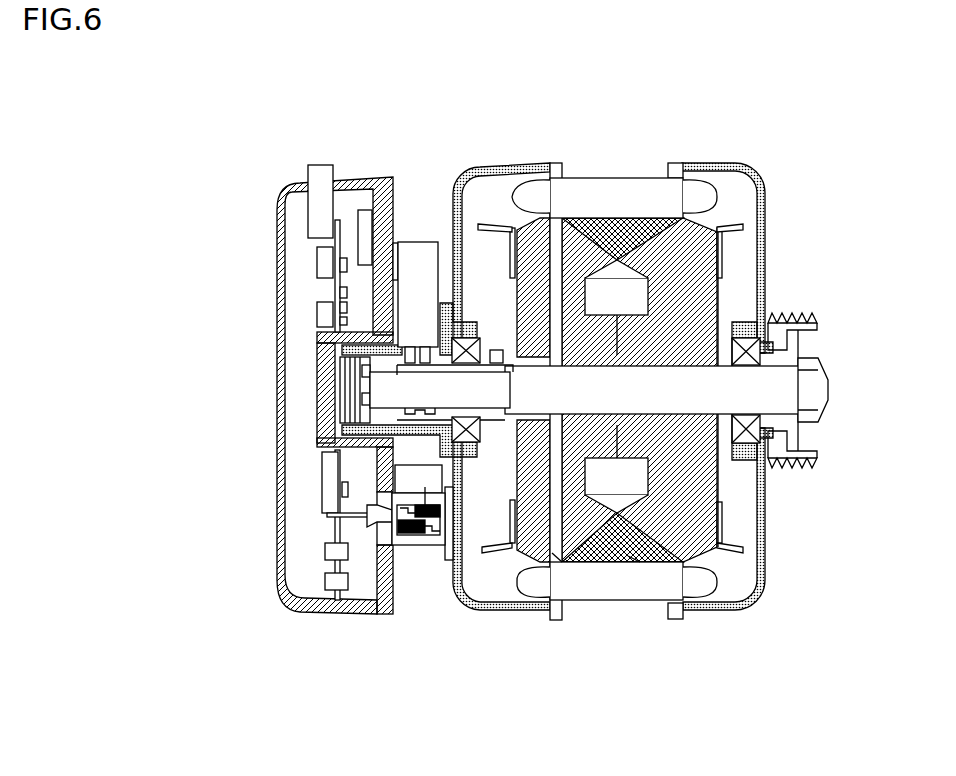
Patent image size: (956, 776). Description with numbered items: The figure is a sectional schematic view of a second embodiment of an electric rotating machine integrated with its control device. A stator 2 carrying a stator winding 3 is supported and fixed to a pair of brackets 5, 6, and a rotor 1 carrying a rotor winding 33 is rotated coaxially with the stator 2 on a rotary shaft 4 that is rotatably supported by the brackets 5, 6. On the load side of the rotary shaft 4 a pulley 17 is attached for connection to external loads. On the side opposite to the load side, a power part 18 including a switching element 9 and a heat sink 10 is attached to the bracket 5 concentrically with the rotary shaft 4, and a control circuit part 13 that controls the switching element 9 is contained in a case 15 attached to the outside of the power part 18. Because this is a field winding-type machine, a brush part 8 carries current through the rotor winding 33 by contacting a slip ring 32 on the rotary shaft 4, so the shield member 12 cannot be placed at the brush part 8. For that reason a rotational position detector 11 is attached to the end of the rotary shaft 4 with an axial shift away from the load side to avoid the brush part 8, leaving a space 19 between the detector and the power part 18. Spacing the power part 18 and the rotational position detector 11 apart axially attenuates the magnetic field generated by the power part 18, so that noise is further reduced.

The rotor 1 is at (690, 518).
The stator 2 is at (597, 178).
The stator winding 3 is at (697, 170).
The rotary shaft 4 is at (615, 480).
The bracket 5 is at (482, 170).
The bracket 6 is at (783, 175).
The brush part 8 is at (418, 242).
The switching element 9 is at (425, 540).
The heat sink 10 is at (413, 548).
The rotational position detector 11 is at (330, 370).
The shield member 12 is at (327, 300).
The control circuit part 13 is at (327, 497).
The case 15 is at (383, 616).
The pulley 17 is at (800, 305).
The power part 18 is at (425, 610).
The space 19 is at (447, 578).
The slip ring 32 is at (562, 553).
The rotor winding 33 is at (632, 560).